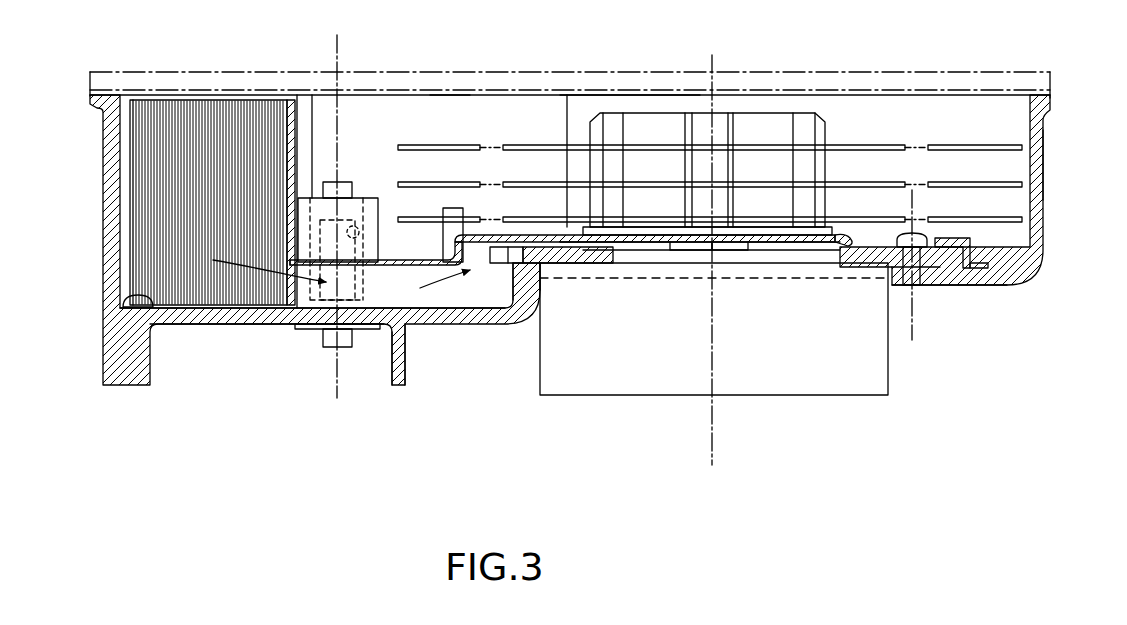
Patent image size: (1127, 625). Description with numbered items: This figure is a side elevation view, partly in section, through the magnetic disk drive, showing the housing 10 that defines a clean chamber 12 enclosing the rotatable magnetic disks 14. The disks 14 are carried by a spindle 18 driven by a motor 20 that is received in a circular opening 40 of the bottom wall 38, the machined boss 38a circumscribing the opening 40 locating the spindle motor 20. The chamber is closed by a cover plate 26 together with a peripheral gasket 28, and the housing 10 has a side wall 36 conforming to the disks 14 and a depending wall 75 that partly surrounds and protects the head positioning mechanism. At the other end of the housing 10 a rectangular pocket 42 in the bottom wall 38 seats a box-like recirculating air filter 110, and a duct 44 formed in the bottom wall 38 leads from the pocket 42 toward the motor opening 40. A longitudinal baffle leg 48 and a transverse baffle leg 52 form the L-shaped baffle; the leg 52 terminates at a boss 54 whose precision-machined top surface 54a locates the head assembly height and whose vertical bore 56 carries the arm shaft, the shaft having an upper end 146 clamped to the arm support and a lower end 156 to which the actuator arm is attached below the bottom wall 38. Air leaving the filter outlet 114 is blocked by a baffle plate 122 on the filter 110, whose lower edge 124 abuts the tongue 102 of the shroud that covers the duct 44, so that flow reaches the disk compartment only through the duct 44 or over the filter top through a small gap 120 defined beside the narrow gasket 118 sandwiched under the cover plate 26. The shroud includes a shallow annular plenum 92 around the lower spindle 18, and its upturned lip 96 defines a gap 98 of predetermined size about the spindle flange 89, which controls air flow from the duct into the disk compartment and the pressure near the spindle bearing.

The housing 10 is at (1046, 183).
The clean chamber 12 is at (908, 112).
The rotatable magnetic disks 14 is at (462, 143).
The spindle 18 is at (773, 113).
The motor 20 is at (790, 396).
The cover plate 26 is at (1052, 74).
The peripheral gasket 28 is at (1052, 95).
The side wall 36 is at (1043, 136).
The bottom wall 38 is at (466, 323).
The machined boss 38a is at (938, 264).
The circular opening 40 is at (528, 298).
The pocket 42 is at (123, 302).
The duct 44 is at (366, 290).
The longitudinal baffle leg 48 is at (432, 117).
The transverse baffle leg 52 is at (312, 150).
The boss 54 is at (380, 211).
The top surface of boss 54a is at (368, 197).
The vertical bore 56 is at (360, 233).
The depending wall 75 is at (405, 356).
The spindle flange 89 is at (788, 251).
The annular plenum 92 is at (478, 264).
The upturned lip 96 is at (850, 237).
The gap 98 is at (835, 235).
The tongue 102 is at (392, 257).
The recirculating air filter 110 is at (157, 118).
The filter outlet 114 is at (222, 118).
The narrow gasket 118 is at (432, 93).
The small gap 120 is at (291, 117).
The baffle plate 122 is at (326, 133).
The lower edge 124 is at (289, 264).
The upper end of arm shaft 146 is at (345, 182).
The lower end of arm shaft 156 is at (323, 338).